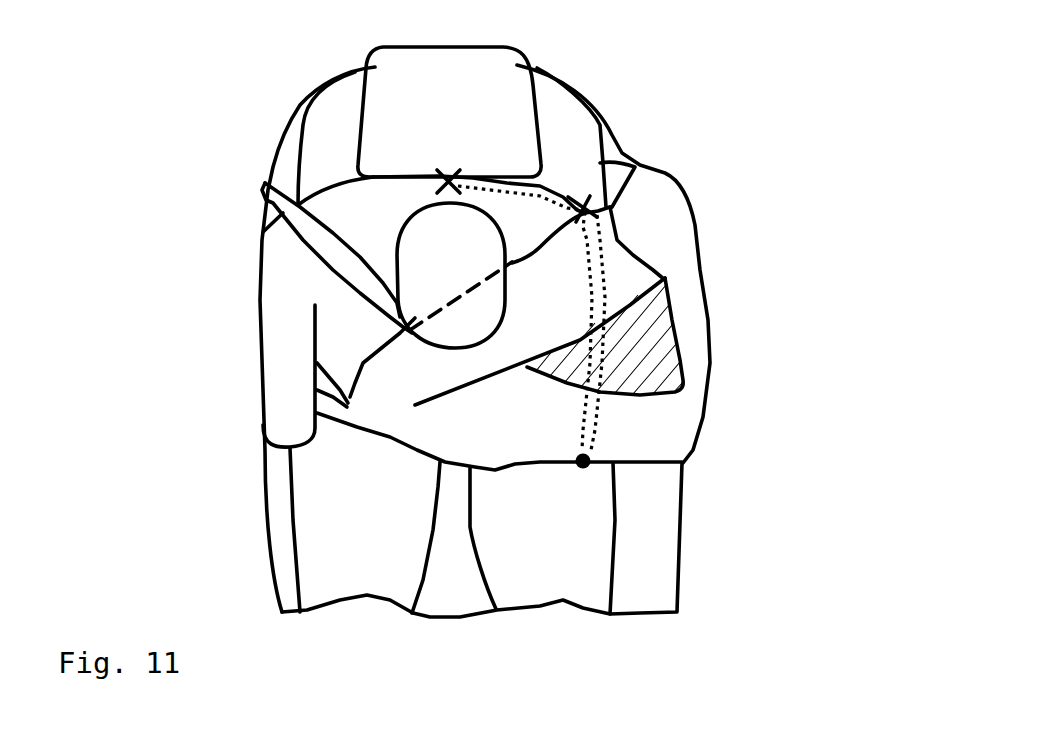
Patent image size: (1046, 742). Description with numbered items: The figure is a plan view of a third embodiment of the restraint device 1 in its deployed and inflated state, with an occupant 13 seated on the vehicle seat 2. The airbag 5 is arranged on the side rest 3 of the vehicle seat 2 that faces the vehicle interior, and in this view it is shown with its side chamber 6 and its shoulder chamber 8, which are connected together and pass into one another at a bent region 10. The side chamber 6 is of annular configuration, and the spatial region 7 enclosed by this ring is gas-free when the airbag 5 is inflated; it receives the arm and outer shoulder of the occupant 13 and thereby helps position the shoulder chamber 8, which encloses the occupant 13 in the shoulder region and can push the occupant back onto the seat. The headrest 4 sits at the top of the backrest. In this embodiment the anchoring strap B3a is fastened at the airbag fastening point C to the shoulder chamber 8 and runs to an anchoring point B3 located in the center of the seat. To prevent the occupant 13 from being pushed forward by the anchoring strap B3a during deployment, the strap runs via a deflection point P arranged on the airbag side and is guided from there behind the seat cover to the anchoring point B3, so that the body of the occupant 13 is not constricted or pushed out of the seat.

The restraint device 1 is at (803, 83).
The vehicle seat 2 is at (657, 533).
The side rest 3 is at (287, 150).
The headrest 4 is at (460, 122).
The airbag 5 is at (760, 200).
The side chamber 6 is at (690, 315).
The spatial region 7 is at (684, 378).
The shoulder chamber 8 is at (567, 313).
The bent region 10 is at (635, 257).
The occupant 13 is at (378, 537).
The anchoring point B3 is at (440, 180).
The anchoring strap B3a is at (600, 430).
The airbag fastening point C is at (613, 465).
The deflection point P is at (583, 207).